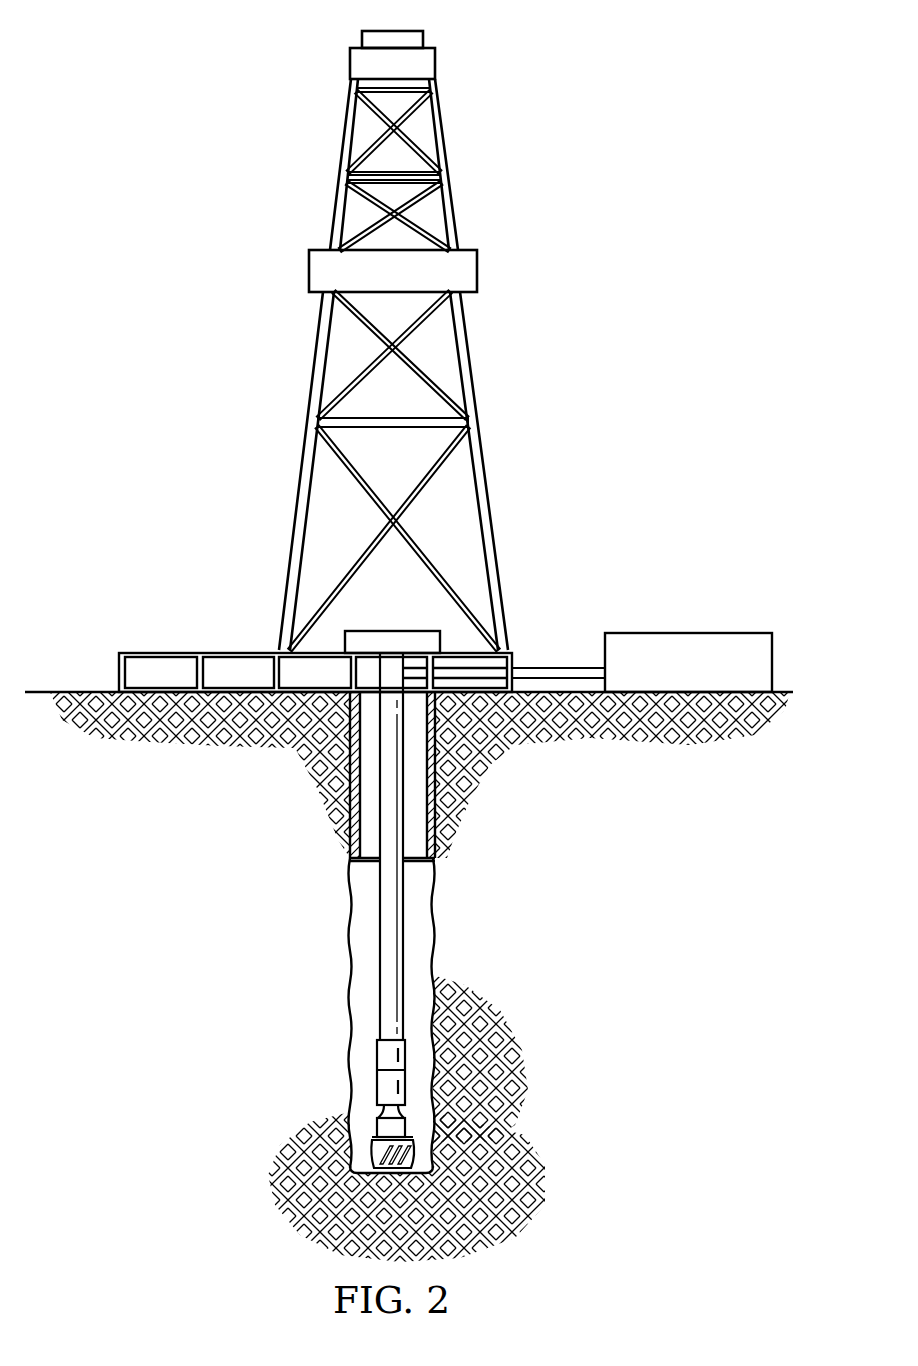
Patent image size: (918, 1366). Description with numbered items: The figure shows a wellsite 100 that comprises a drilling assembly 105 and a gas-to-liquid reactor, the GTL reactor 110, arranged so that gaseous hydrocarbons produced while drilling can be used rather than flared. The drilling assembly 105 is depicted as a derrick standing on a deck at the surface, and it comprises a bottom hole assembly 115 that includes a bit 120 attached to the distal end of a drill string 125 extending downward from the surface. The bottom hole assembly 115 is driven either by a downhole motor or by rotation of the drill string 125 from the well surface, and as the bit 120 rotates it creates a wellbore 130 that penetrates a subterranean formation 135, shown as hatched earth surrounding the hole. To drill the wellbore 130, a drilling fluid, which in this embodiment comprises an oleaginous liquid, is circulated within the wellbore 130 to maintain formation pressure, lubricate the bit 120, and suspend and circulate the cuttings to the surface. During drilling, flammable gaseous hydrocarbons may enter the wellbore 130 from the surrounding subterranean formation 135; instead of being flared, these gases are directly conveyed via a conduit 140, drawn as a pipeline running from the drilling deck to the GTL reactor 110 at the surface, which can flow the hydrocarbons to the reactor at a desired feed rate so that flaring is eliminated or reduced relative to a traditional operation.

The wellsite 100 is at (624, 76).
The drilling assembly 105 is at (341, 165).
The GTL reactor 110 is at (687, 633).
The bottom hole assembly 115 is at (375, 1080).
The bit 120 is at (417, 1145).
The drill string 125 is at (378, 923).
The wellbore 130 is at (440, 940).
The subterranean formation 135 is at (648, 903).
The conduit 140 is at (550, 667).